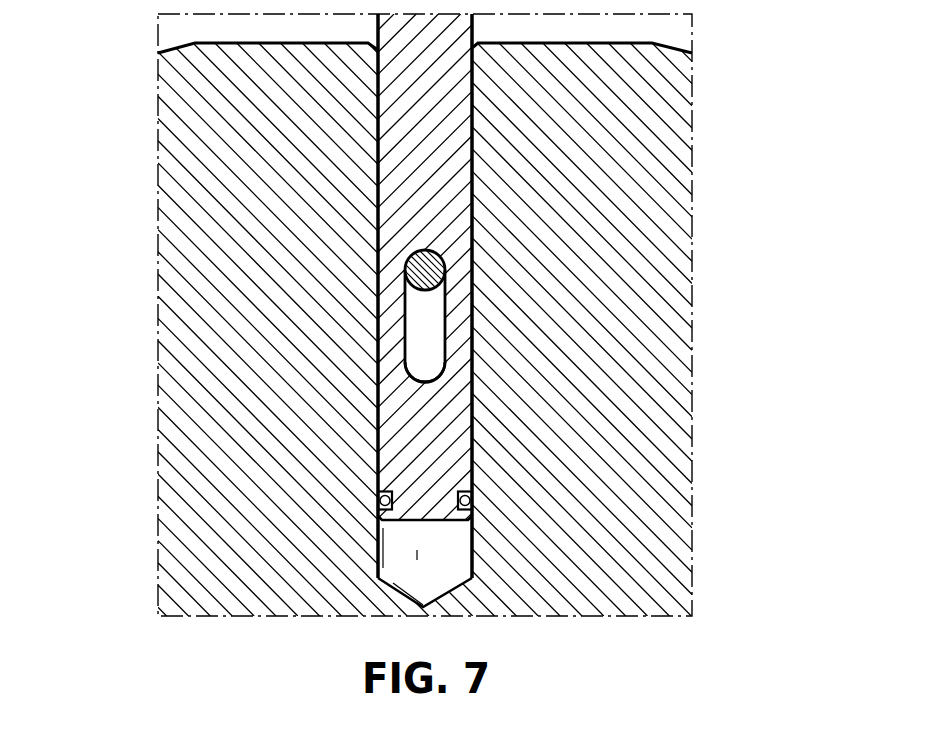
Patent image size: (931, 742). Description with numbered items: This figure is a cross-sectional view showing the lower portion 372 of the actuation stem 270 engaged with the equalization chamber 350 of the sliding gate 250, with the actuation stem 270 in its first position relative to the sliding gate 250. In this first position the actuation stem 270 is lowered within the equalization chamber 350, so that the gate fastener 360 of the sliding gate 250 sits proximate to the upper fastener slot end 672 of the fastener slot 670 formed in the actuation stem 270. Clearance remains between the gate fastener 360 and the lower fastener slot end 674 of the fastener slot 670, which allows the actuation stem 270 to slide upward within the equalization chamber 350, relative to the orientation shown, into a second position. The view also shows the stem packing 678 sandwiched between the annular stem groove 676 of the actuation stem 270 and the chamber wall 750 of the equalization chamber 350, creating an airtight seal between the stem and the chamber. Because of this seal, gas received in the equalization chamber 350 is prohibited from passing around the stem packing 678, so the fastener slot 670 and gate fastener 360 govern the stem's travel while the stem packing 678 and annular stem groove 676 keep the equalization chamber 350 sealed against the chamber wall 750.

The sliding gate 250 is at (653, 238).
The actuation stem 270 is at (447, 145).
The lower portion 372 is at (377, 190).
The gate fastener 360 is at (405, 268).
The fastener slot 670 is at (425, 330).
The upper fastener slot end 672 is at (432, 251).
The lower fastener slot end 674 is at (427, 373).
The annular stem groove 676 is at (473, 478).
The stem packing 678 is at (378, 502).
The equalization chamber 350 is at (403, 558).
The chamber wall 750 is at (452, 547).